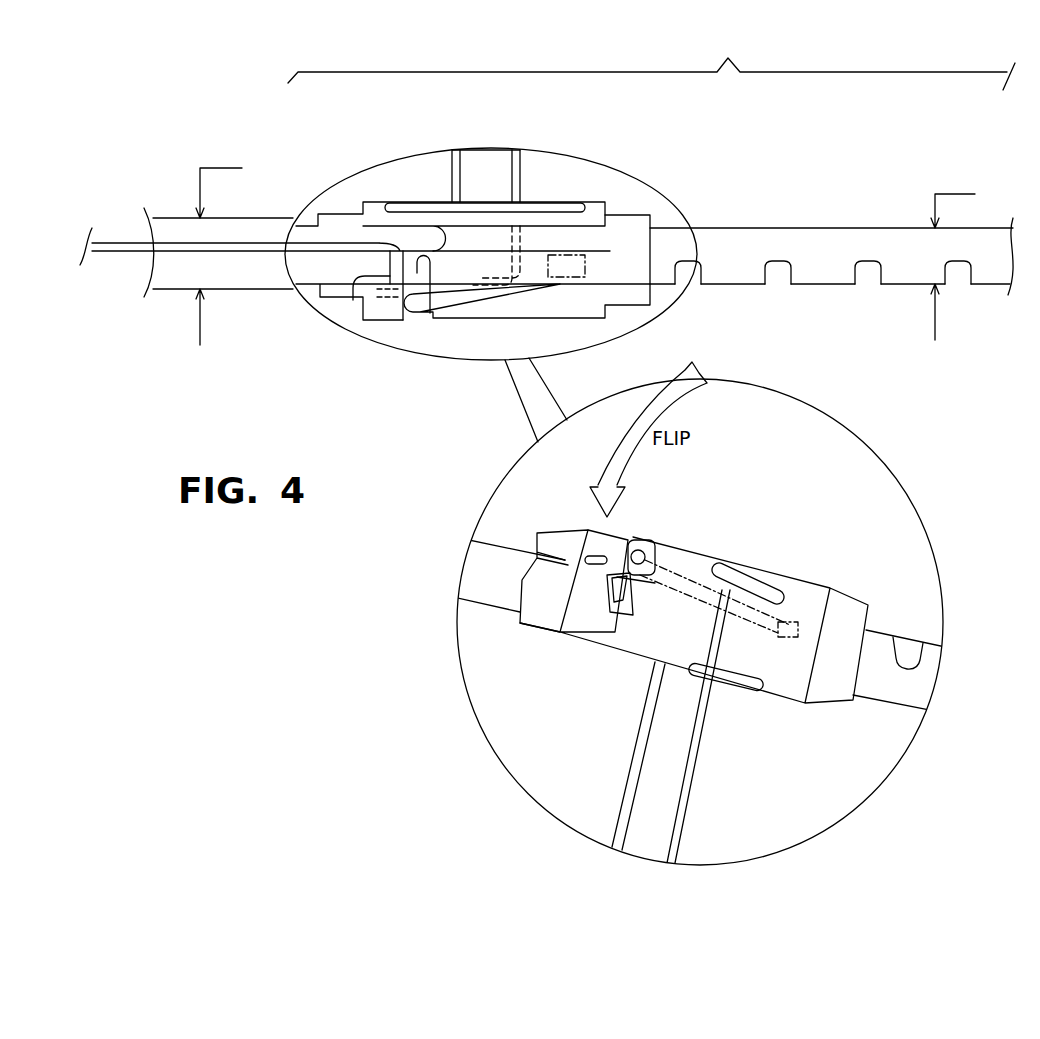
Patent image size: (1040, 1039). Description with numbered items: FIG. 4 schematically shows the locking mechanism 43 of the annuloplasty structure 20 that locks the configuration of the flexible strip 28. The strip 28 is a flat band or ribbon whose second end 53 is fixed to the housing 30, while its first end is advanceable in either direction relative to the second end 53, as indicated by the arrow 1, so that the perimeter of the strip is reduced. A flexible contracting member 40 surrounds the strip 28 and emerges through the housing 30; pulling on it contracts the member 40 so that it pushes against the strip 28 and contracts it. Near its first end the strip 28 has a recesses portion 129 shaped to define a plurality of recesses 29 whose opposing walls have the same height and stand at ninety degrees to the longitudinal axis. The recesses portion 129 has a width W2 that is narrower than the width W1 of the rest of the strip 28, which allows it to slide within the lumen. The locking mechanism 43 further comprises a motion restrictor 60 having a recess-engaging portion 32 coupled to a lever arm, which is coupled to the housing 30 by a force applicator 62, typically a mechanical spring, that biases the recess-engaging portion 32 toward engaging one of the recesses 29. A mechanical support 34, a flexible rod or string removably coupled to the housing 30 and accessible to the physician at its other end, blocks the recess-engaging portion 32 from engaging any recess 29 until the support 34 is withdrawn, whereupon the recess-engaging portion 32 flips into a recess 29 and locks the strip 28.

The recesses portion 129 is at (651, 61).
The arrow 1 is at (747, 140).
The annuloplasty structure 20 is at (890, 191).
The strip 28 is at (808, 244).
The recesses 29 is at (868, 283).
The housing 30 is at (372, 320).
The recess-engaging portion 32 is at (404, 320).
The mechanical support 34 is at (520, 168).
The flexible contracting member 40 is at (453, 175).
The locking mechanism 43 is at (496, 147).
The second end of strip 53 is at (353, 300).
The motion restrictor 60 is at (447, 313).
The force applicator 62 is at (585, 270).
The width of strip W1 is at (219, 242).
The width of recesses portion W2 is at (954, 252).